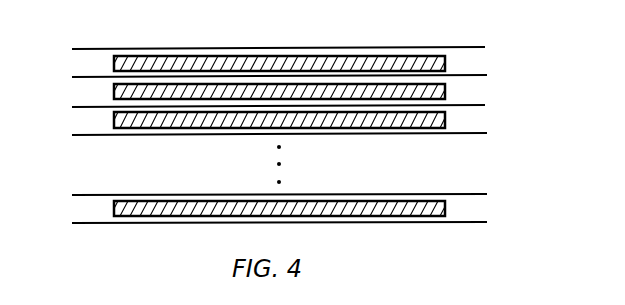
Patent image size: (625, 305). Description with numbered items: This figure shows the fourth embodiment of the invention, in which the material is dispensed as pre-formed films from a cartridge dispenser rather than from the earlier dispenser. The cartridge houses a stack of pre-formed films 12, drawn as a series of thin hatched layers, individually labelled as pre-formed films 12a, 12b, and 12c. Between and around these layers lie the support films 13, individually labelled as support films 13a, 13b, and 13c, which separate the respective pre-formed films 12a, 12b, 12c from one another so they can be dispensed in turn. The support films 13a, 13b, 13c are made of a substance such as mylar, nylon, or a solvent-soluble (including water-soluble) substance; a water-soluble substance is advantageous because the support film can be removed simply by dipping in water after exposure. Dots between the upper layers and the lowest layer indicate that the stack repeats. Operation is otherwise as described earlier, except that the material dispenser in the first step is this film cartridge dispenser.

The pre-formed films 12 is at (540, 108).
The pre-formed film 12a is at (485, 47).
The pre-formed film 12b is at (487, 75).
The pre-formed film 12c is at (485, 104).
The support films 13 is at (89, 36).
The support film 13a is at (113, 60).
The support film 13b is at (113, 88).
The support film 13c is at (113, 117).